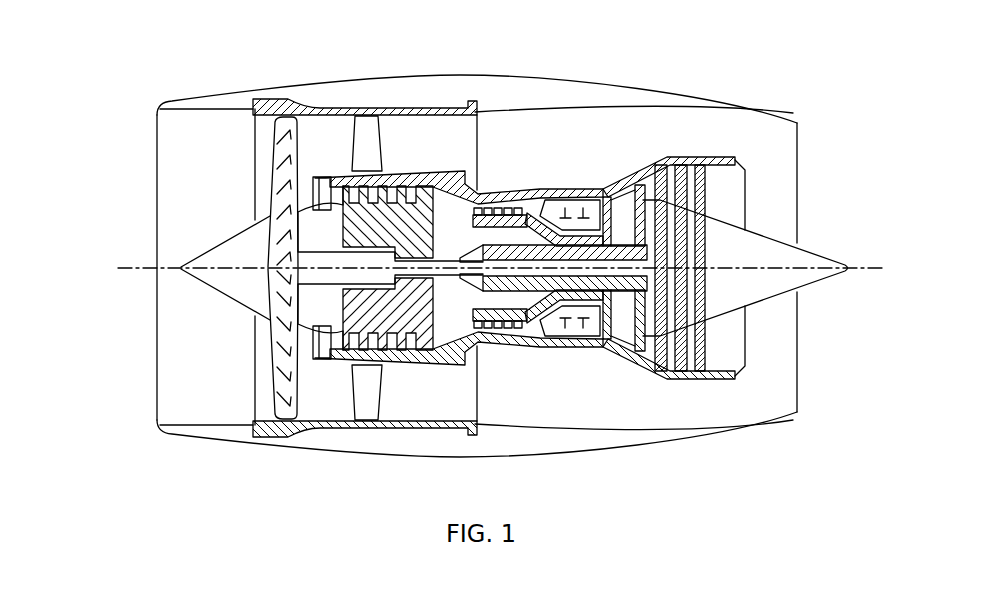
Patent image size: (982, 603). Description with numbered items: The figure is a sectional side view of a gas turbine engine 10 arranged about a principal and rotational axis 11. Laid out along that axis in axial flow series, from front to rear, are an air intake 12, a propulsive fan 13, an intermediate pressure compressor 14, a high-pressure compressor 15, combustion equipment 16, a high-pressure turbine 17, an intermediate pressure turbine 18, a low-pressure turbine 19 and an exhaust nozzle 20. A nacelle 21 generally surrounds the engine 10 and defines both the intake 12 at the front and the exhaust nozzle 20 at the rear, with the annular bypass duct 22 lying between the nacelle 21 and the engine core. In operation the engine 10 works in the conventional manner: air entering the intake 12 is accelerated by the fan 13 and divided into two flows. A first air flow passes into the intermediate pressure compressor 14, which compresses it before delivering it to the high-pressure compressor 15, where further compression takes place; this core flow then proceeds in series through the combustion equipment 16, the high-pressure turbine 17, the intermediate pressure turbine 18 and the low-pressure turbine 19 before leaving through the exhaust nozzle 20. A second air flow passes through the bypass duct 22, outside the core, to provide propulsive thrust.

The gas turbine engine 10 is at (130, 150).
The principal and rotational axis 11 is at (168, 266).
The air intake 12 is at (214, 111).
The propulsive fan 13 is at (273, 378).
The intermediate pressure compressor 14 is at (400, 360).
The high-pressure compressor 15 is at (500, 207).
The combustion equipment 16 is at (552, 333).
The high-pressure turbine 17 is at (600, 335).
The intermediate pressure turbine 18 is at (642, 178).
The low-pressure turbine 19 is at (657, 360).
The exhaust nozzle 20 is at (797, 398).
The nacelle 21 is at (623, 85).
The bypass duct 22 is at (440, 154).